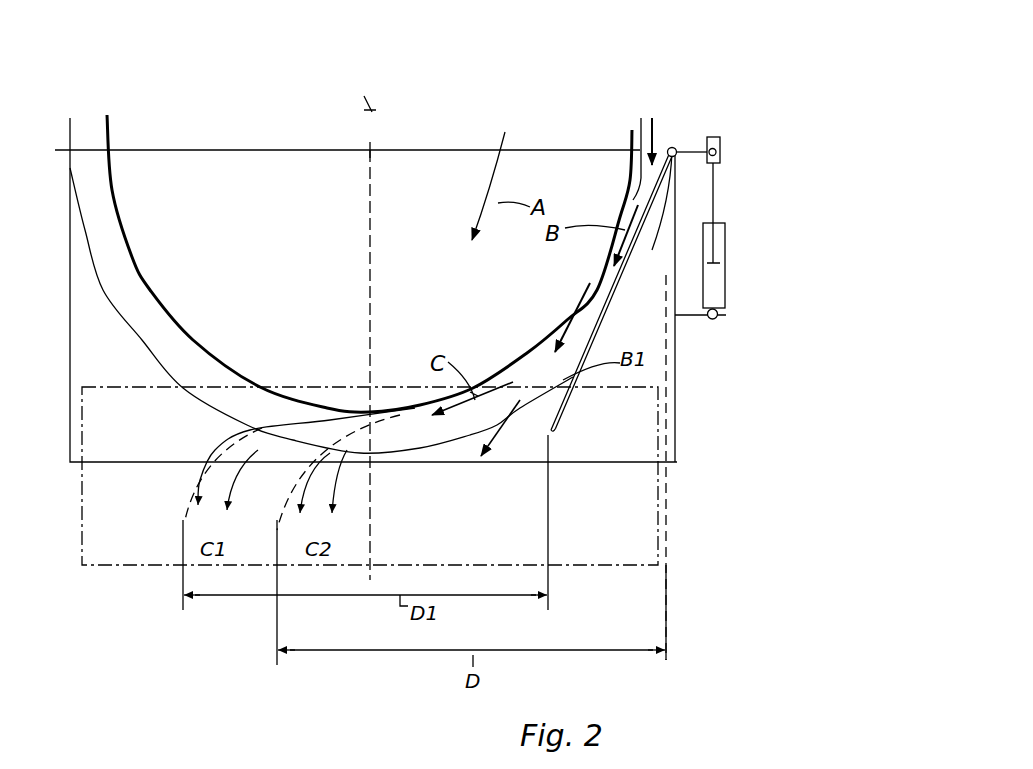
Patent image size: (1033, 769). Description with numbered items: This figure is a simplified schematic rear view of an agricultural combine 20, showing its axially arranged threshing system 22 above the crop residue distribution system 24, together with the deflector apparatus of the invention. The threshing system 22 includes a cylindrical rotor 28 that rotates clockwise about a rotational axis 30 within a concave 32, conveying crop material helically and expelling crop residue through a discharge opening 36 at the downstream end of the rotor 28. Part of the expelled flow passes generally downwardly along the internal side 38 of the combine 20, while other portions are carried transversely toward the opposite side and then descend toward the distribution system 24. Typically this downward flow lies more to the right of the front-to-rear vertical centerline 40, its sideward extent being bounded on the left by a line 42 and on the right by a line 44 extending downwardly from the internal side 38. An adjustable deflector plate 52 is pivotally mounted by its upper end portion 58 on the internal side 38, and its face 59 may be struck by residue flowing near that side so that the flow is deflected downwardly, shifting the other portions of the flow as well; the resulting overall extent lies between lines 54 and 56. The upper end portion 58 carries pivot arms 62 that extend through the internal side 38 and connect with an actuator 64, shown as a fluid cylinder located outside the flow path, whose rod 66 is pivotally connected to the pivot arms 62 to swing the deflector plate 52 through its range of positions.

The agricultural combine 20 is at (768, 55).
The threshing system 22 is at (714, 98).
The crop residue distribution system 24 is at (668, 557).
The cylindrical rotor 28 is at (638, 126).
The rotational axis 30 is at (383, 140).
The concave 32 is at (675, 140).
The discharge opening 36 is at (665, 200).
The internal side 38 is at (666, 365).
The vertical centerline 40 is at (372, 300).
The line 42 is at (277, 618).
The line 44 is at (668, 623).
The deflector plate 52 is at (605, 290).
The line 54 is at (183, 535).
The line 56 is at (550, 540).
The upper end portion 58 is at (657, 182).
The face 59 is at (565, 363).
The pivot arms 62 is at (693, 156).
The actuator 64 is at (726, 283).
The rod 66 is at (713, 200).